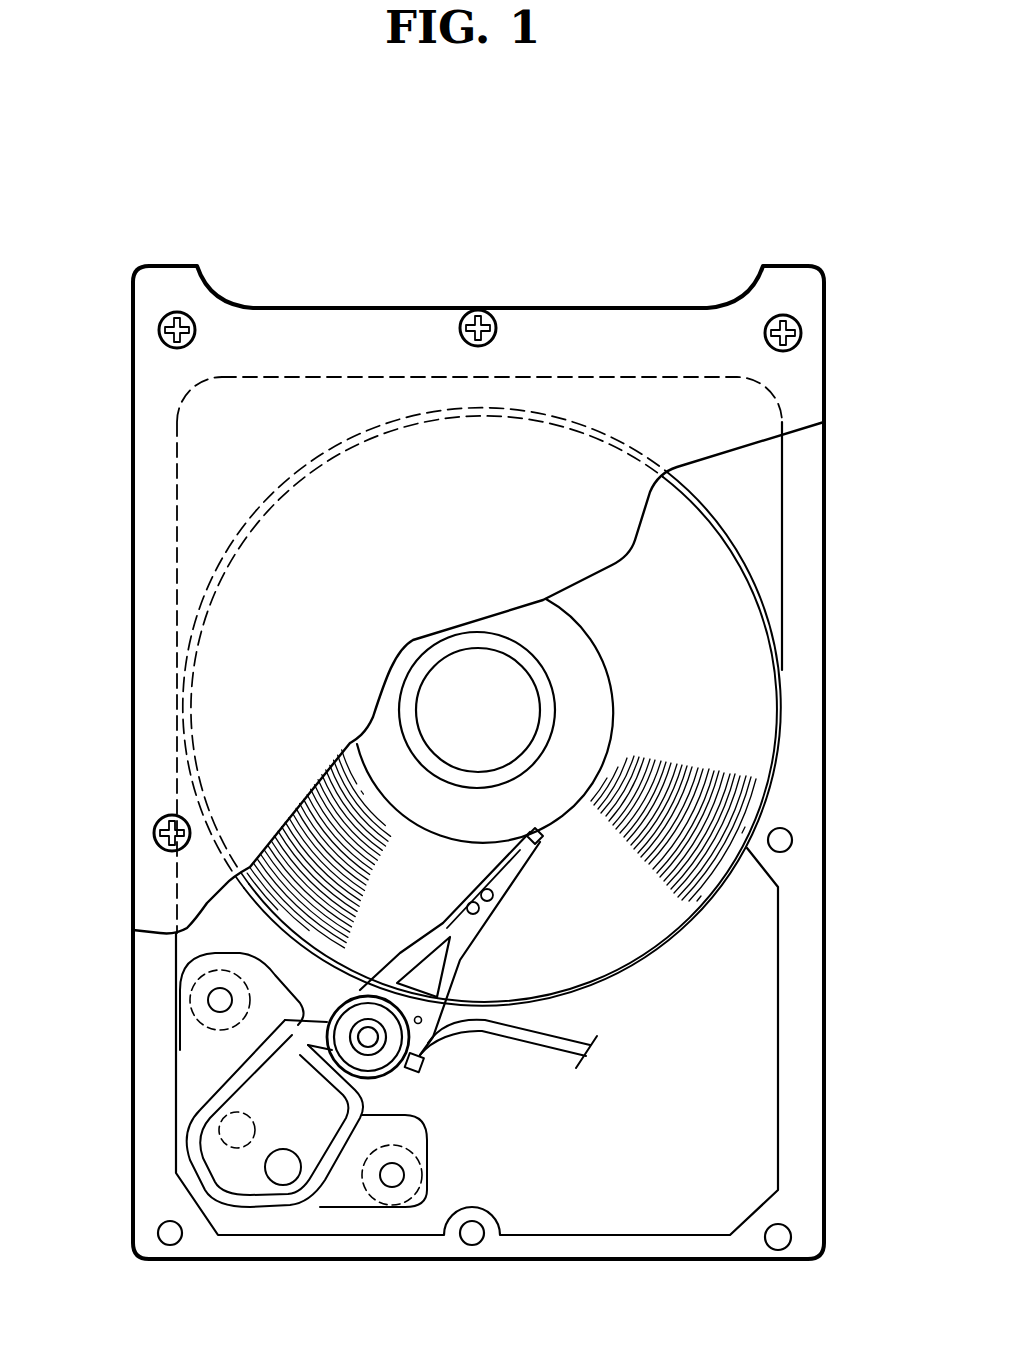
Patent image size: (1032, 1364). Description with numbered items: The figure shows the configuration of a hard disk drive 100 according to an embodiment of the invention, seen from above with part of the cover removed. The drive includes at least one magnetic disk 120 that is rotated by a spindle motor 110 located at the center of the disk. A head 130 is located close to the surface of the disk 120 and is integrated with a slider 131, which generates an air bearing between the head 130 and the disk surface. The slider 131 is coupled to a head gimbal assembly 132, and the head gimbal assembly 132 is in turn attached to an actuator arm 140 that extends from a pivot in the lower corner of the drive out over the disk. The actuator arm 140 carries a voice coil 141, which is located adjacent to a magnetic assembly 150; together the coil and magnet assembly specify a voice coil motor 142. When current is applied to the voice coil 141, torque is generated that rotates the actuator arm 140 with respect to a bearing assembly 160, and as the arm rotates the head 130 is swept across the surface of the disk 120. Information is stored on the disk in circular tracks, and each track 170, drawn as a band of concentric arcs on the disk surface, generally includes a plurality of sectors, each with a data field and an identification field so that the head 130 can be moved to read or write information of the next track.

The hard disk drive 100 is at (636, 240).
The spindle motor 110 is at (440, 680).
The magnetic disk 120 is at (733, 638).
The head 130 is at (545, 845).
The slider 131 is at (512, 882).
The head gimbal assembly 132 is at (467, 979).
The actuator arm 140 is at (273, 1050).
The voice coil 141 is at (205, 1127).
The voice coil motor 142 is at (333, 1197).
The magnetic assembly 150 is at (215, 1068).
The bearing assembly 160 is at (422, 1062).
The track 170 is at (337, 813).